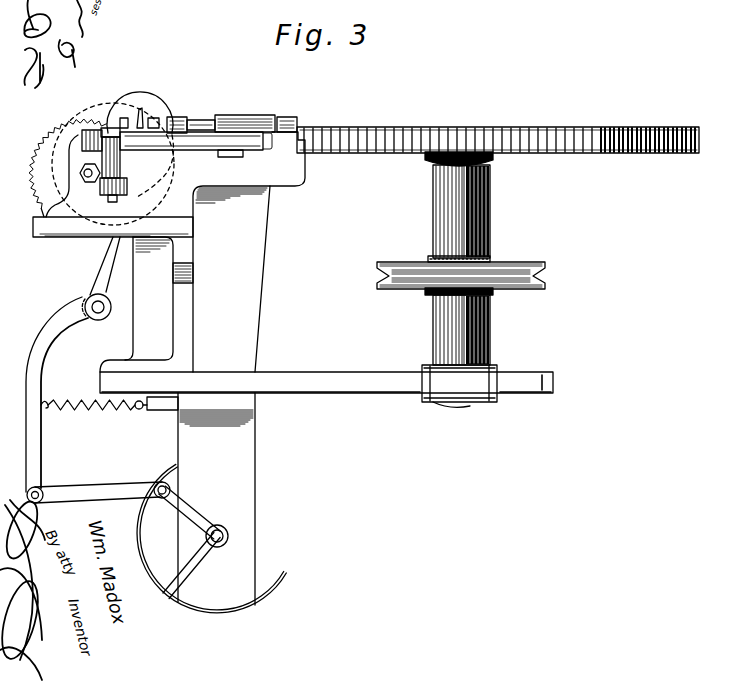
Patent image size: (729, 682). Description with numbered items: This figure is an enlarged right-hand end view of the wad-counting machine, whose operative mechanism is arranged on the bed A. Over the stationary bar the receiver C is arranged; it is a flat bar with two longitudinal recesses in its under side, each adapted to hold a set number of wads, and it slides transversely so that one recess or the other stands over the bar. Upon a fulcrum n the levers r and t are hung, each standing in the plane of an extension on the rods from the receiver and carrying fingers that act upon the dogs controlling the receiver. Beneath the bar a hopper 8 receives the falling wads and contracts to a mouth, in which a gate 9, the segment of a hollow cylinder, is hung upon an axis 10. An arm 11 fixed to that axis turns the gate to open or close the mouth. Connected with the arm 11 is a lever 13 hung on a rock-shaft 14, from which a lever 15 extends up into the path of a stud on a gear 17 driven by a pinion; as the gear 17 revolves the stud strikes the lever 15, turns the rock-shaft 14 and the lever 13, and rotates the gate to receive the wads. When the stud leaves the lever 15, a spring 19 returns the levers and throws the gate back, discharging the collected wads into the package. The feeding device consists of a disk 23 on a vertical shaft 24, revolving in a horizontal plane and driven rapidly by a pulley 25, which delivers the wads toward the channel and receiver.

The hopper 8 is at (224, 395).
The gate 9 is at (211, 545).
The axis 10 is at (228, 537).
The arm 11 is at (187, 540).
The lever 13 is at (84, 400).
The rock-shaft 14 is at (107, 308).
The lever 15 is at (107, 278).
The gear 17 is at (67, 168).
The spring 19 is at (109, 411).
The disk 23 is at (699, 146).
The vertical shaft 24 is at (470, 412).
The pulley 25 is at (541, 274).
The fulcrum n is at (112, 128).
The lever t is at (200, 120).
The receiver C is at (256, 112).
The lever r is at (196, 146).
The bed A is at (713, 385).